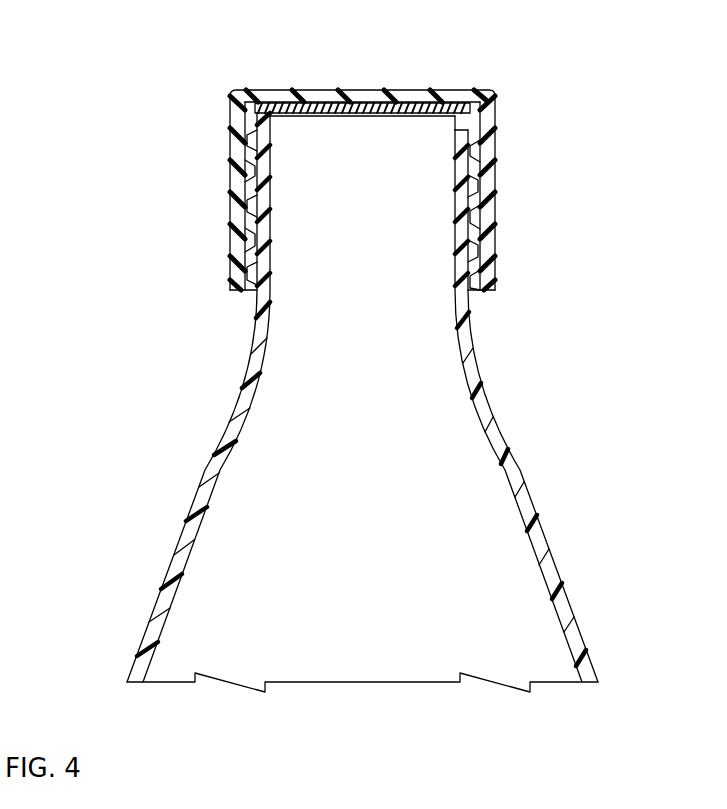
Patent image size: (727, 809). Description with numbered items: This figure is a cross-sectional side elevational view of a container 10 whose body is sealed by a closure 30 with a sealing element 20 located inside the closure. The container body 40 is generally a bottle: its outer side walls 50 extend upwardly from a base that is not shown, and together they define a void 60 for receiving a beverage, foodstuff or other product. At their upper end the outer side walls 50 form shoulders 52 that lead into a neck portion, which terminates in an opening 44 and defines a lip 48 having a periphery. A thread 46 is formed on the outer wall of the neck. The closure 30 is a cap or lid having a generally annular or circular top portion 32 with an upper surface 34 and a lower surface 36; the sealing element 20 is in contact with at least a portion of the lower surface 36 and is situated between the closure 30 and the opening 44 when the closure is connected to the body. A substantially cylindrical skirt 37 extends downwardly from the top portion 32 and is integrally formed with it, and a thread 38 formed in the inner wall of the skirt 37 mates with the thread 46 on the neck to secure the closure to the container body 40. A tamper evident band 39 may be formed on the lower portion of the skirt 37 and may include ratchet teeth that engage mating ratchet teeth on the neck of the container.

The container 10 is at (351, 402).
The sealing element 20 is at (361, 98).
The closure 30 is at (230, 140).
The top portion 32 is at (300, 93).
The upper surface 34 is at (333, 104).
The lower surface 36 is at (329, 114).
The skirt 37 is at (492, 153).
The thread 38 is at (250, 180).
The tamper evident band 39 is at (493, 258).
The container body 40 is at (566, 540).
The opening 44 is at (441, 114).
The thread 46 is at (487, 200).
The lip 48 is at (459, 120).
The outer side walls 50 is at (130, 661).
The shoulders 52 is at (222, 453).
The void 60 is at (369, 613).